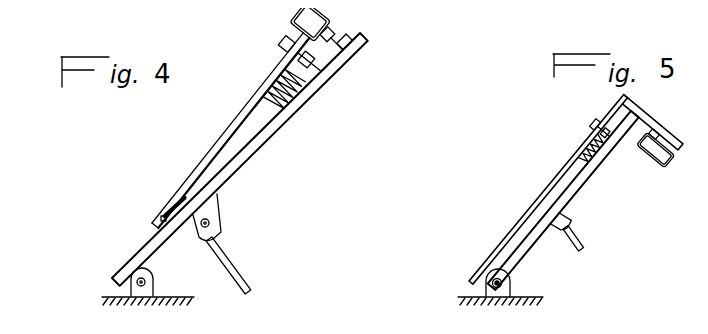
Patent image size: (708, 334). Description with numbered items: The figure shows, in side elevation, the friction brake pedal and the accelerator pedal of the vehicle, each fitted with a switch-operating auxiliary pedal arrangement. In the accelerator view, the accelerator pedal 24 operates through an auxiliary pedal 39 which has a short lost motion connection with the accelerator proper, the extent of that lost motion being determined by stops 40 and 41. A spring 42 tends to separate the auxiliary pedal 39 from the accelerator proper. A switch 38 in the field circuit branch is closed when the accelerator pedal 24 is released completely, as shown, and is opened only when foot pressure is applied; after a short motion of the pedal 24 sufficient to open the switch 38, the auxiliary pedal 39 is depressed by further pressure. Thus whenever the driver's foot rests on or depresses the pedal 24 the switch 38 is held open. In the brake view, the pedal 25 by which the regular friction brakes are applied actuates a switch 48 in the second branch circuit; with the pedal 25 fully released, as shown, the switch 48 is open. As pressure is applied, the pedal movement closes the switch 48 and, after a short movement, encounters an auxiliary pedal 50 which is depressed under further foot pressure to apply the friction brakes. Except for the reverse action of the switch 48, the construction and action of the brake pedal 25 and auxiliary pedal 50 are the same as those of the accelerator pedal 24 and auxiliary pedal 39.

In FIG. 4, the switch 48 is at (316, 13).
In FIG. 4, the pedal 25 is at (235, 116).
In FIG. 4, the auxiliary pedal 50 is at (237, 153).
In FIG. 5, the stop 40 is at (588, 115).
In FIG. 5, the stop 41 is at (589, 132).
In FIG. 5, the auxiliary pedal 39 is at (568, 178).
In FIG. 5, the spring 42 is at (590, 158).
In FIG. 5, the switch 38 is at (658, 144).
In FIG. 5, the accelerator pedal 24 is at (524, 222).